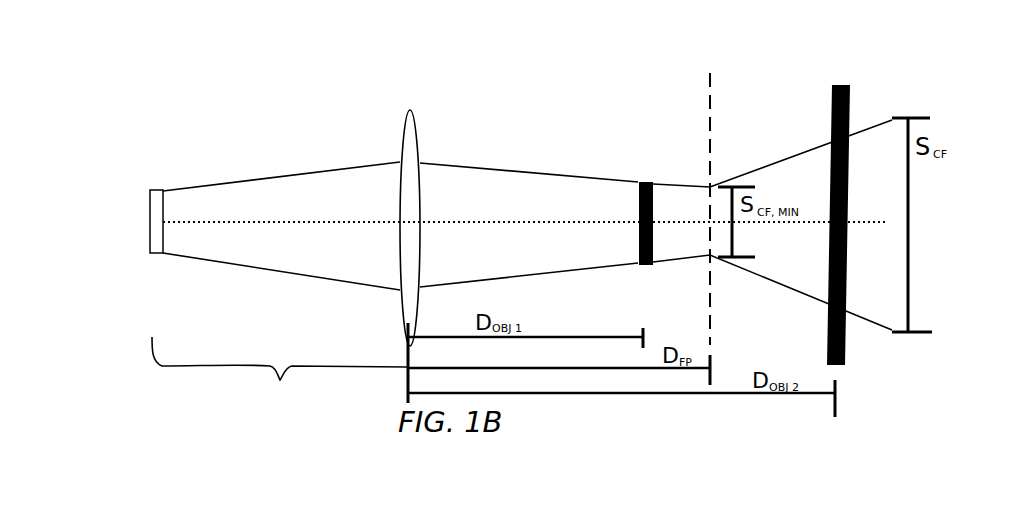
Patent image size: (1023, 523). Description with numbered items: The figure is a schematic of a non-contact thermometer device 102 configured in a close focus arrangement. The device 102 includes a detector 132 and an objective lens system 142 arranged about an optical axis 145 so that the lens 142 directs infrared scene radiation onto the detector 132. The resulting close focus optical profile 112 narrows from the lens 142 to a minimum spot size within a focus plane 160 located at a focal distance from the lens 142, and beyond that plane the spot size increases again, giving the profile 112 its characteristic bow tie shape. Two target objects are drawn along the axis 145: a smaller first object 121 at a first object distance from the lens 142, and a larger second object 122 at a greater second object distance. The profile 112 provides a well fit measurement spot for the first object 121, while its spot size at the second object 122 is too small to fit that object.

The non-contact thermometer device 102 is at (280, 372).
The close focus optical profile 112 is at (480, 163).
The first object 121 is at (654, 182).
The second object 122 is at (850, 88).
The detector 132 is at (158, 191).
The objective lens system 142 is at (410, 110).
The optical axis 145 is at (540, 222).
The focus plane 160 is at (712, 82).